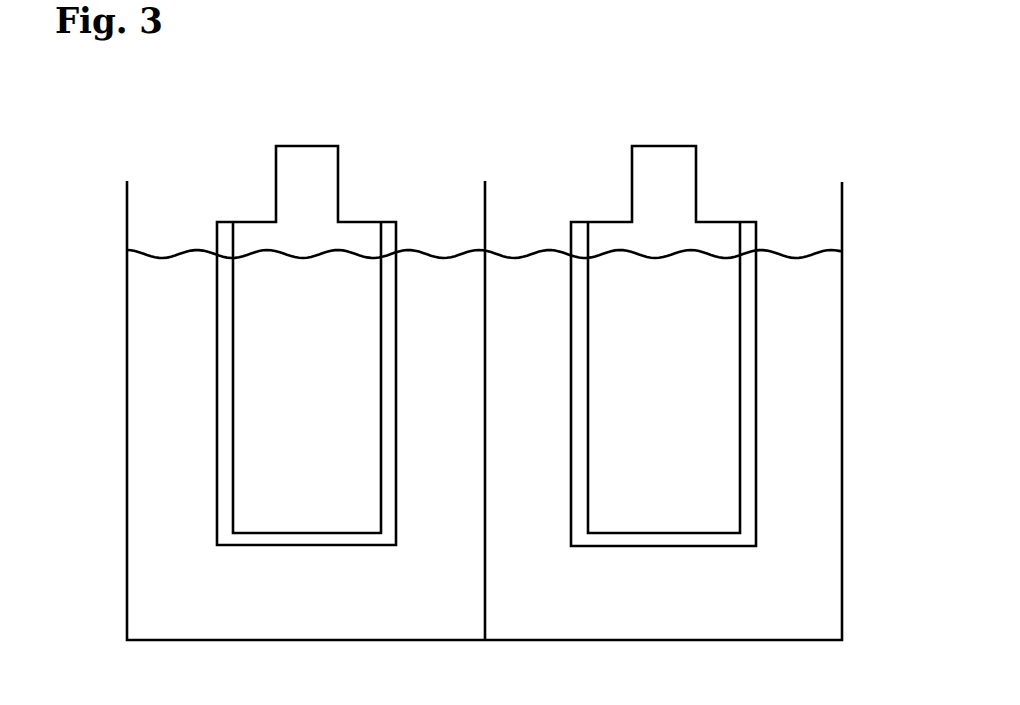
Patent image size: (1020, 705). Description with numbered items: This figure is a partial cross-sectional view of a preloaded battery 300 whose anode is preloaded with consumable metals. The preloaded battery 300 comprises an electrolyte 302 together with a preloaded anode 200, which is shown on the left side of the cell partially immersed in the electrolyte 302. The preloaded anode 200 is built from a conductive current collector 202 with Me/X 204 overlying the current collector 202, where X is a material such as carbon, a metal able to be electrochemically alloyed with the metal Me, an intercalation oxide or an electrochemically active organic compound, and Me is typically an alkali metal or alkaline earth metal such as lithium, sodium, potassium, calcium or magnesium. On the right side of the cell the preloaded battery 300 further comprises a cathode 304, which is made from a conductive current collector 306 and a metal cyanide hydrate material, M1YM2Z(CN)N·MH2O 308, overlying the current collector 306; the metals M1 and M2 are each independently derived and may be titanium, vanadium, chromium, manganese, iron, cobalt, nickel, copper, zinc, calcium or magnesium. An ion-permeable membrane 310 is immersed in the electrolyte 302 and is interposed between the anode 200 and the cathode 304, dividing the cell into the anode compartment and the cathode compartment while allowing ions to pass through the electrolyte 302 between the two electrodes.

The preloaded battery 300 is at (238, 122).
The preloaded anode 200 is at (342, 304).
The Me/X 204 is at (223, 237).
The current collector 202 is at (327, 389).
The cathode 304 is at (704, 314).
The M1YM2Z(CN)N·MH2O 308 is at (747, 240).
The current collector 306 is at (664, 377).
The electrolyte 302 is at (417, 620).
The ion-permeable membrane 310 is at (487, 603).